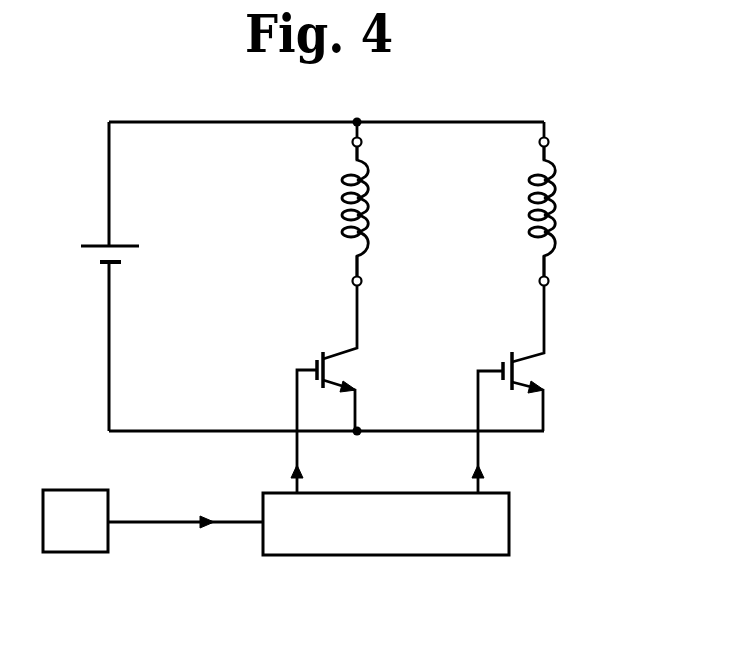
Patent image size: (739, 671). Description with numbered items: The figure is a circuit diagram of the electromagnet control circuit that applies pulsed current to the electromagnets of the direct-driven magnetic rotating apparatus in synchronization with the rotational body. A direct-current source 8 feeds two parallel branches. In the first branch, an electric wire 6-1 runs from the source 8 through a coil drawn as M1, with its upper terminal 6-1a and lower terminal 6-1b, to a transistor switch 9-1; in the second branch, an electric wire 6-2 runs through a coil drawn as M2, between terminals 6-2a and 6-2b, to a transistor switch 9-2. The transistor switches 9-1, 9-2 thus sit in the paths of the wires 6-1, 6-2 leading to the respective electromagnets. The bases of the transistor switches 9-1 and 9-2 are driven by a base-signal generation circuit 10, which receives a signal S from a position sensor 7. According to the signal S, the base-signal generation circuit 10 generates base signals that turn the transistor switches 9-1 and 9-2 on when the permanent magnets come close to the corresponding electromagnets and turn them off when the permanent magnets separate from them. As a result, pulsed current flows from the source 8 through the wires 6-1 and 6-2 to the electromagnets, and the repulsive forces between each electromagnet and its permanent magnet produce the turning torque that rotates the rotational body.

The direct-current source 8 is at (87, 238).
The electric wire 6-1 is at (338, 217).
The first terminal of coil 6-1 6-1a is at (394, 144).
The second terminal of coil 6-1 6-1b is at (395, 281).
The electric wire 6-2 is at (529, 209).
The first terminal of coil 6-2 6-2a is at (588, 144).
The second terminal of coil 6-2 6-2b is at (588, 281).
The coil M1 is at (398, 216).
The coil M2 is at (596, 213).
The transistor switch 9-1 is at (352, 373).
The transistor switch 9-2 is at (547, 369).
The base-signal generation circuit 10 is at (415, 556).
The position sensor 7 is at (76, 554).
The signal S is at (157, 524).